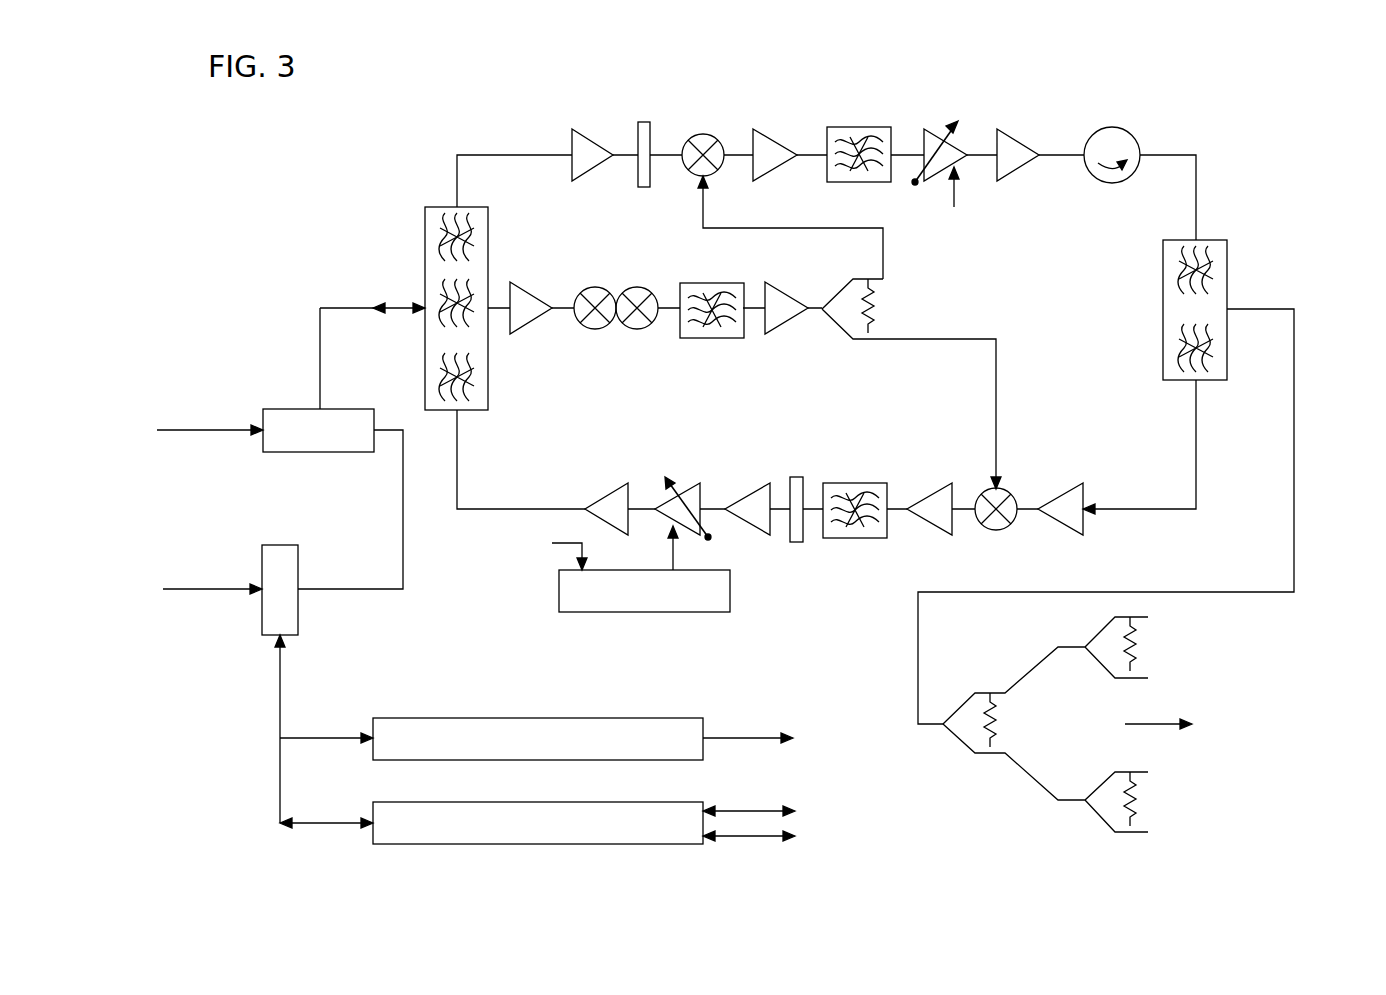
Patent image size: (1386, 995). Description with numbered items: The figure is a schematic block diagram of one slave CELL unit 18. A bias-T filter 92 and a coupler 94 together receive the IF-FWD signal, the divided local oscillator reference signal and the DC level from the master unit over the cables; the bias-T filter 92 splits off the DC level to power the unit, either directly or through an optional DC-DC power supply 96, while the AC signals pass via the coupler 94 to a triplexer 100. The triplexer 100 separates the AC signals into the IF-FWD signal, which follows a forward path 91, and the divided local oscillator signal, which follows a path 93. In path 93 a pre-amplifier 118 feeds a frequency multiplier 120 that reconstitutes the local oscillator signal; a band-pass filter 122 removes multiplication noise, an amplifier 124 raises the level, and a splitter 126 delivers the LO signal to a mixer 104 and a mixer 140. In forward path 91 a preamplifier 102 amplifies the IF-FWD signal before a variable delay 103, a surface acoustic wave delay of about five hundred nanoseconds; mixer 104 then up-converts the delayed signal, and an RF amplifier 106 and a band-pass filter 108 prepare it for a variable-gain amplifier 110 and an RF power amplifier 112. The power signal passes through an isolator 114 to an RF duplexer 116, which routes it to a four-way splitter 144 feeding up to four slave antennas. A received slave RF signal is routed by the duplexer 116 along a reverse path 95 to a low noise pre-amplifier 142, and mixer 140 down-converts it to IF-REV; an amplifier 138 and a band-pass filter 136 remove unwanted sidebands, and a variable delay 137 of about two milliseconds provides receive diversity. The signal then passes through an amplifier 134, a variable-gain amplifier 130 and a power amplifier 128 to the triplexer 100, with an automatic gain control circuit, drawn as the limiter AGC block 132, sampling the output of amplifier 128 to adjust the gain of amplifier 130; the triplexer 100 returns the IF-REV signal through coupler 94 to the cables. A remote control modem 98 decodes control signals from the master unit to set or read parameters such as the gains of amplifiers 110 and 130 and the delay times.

The slave CELL unit 18 is at (282, 249).
The forward path 91 is at (549, 120).
The bias-T filter 92 is at (290, 635).
The path 93 is at (571, 352).
The coupler 94 is at (336, 409).
The reverse path 95 is at (1200, 536).
The DC-DC power supply 96 is at (575, 718).
The remote control modem 98 is at (575, 802).
The triplexer 100 is at (440, 207).
The preamplifier 102 is at (578, 178).
The variable delay 103 is at (645, 122).
The mixer 104 is at (710, 137).
The RF amplifier 106 is at (772, 130).
The band-pass filter 108 is at (848, 127).
The variable-gain amplifier 110 is at (930, 182).
The RF power amplifier 112 is at (1010, 131).
The isolator 114 is at (1112, 127).
The RF duplexer 116 is at (1214, 240).
The pre-amplifier 118 is at (527, 292).
The frequency multiplier 120 is at (640, 330).
The band-pass filter 122 is at (690, 337).
The amplifier 124 is at (775, 335).
The splitter 126 is at (873, 300).
The power amplifier 128 is at (617, 487).
The variable-gain amplifier 130 is at (690, 483).
The limiter AGC 132 is at (655, 612).
The amplifier 134 is at (762, 534).
The band-pass filter 136 is at (843, 483).
The variable delay 137 is at (797, 477).
The amplifier 138 is at (947, 533).
The mixer 140 is at (990, 490).
The low noise pre-amplifier 142 is at (1075, 485).
The four-way splitter 144 is at (1010, 655).